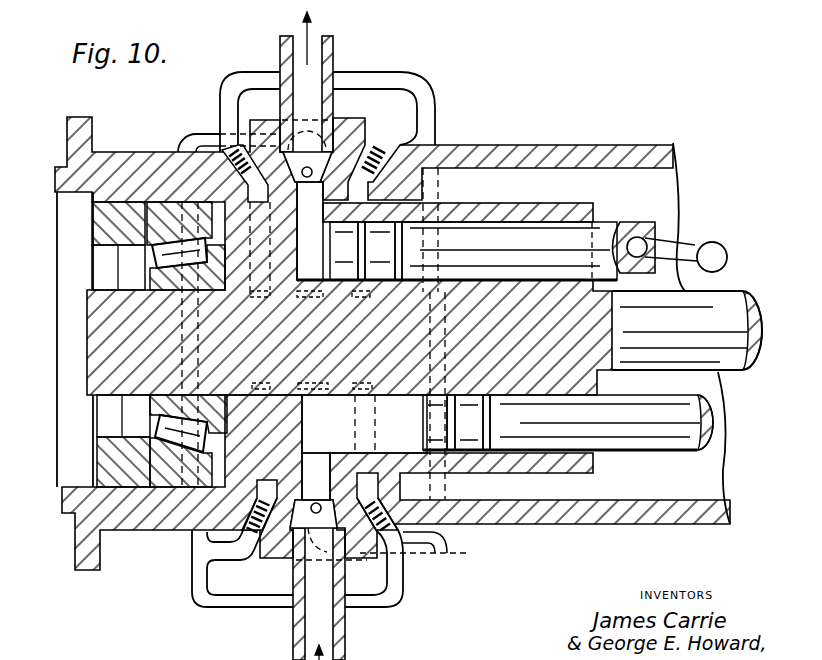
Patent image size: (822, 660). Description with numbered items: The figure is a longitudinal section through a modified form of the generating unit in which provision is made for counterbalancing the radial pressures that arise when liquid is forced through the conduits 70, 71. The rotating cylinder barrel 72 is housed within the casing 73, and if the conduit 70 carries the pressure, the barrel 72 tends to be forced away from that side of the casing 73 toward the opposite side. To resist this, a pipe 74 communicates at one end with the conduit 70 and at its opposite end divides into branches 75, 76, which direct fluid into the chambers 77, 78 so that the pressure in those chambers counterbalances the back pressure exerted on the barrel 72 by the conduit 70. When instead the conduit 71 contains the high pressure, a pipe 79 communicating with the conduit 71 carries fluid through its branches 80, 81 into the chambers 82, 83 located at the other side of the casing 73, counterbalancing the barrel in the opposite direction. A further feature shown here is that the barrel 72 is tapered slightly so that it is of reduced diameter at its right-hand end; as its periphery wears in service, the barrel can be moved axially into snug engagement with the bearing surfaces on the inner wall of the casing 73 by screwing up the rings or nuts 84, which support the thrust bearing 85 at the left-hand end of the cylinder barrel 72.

The conduit 70 is at (333, 45).
The conduit 71 is at (344, 640).
The cylinder barrel 72 is at (500, 192).
The casing 73 is at (503, 148).
The pipe 74 is at (192, 136).
The branch 75 is at (232, 550).
The branch 76 is at (261, 607).
The chamber 77 is at (298, 462).
The chamber 78 is at (365, 487).
The pipe 79 is at (425, 548).
The branch 80 is at (398, 124).
The branch 81 is at (220, 93).
The chamber 82 is at (222, 155).
The chamber 83 is at (362, 192).
The rings or nuts 84 is at (130, 252).
The thrust bearing 85 is at (150, 227).